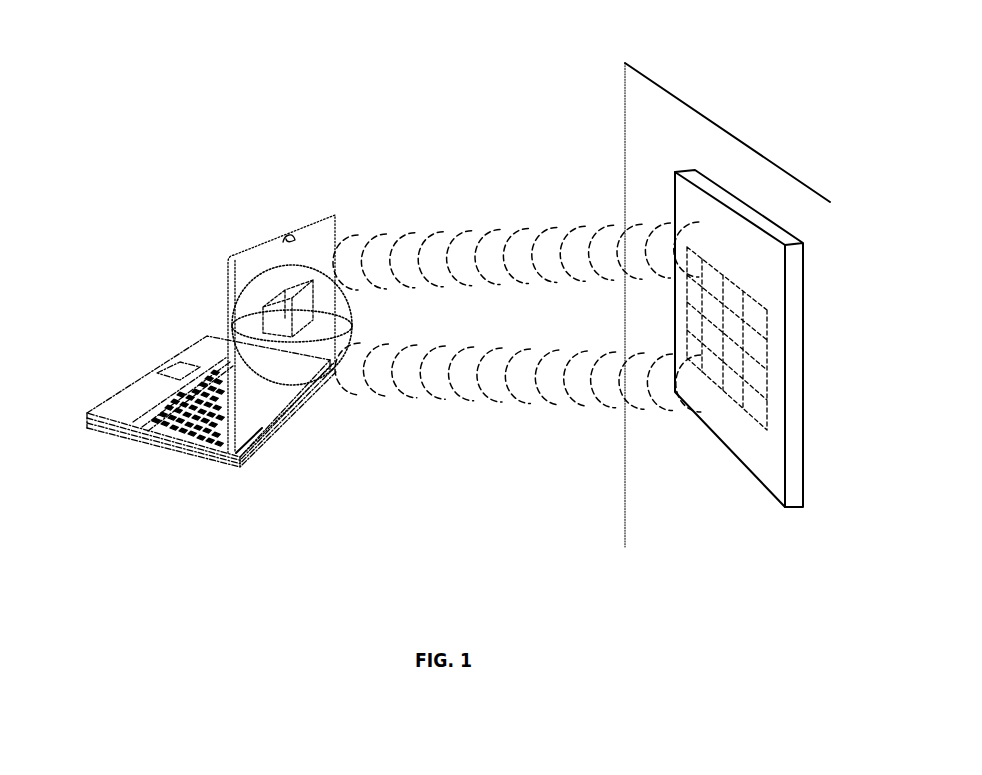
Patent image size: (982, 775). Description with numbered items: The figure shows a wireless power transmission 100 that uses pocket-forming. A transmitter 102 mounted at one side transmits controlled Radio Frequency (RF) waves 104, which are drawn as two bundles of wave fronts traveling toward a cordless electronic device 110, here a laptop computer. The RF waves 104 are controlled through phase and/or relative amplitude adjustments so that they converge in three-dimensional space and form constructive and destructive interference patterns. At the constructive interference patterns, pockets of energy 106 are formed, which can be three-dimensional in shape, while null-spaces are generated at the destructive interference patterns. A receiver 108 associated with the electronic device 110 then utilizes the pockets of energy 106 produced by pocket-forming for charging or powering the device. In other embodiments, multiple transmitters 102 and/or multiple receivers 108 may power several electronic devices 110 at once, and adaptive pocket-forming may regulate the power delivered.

The wireless power transmission 100 is at (145, 125).
The transmitter 102 is at (698, 213).
The Radio Frequency (RF) waves 104 is at (480, 255).
The pockets of energy 106 is at (289, 263).
The receiver 108 is at (268, 352).
The cordless electronic device 110 is at (123, 398).